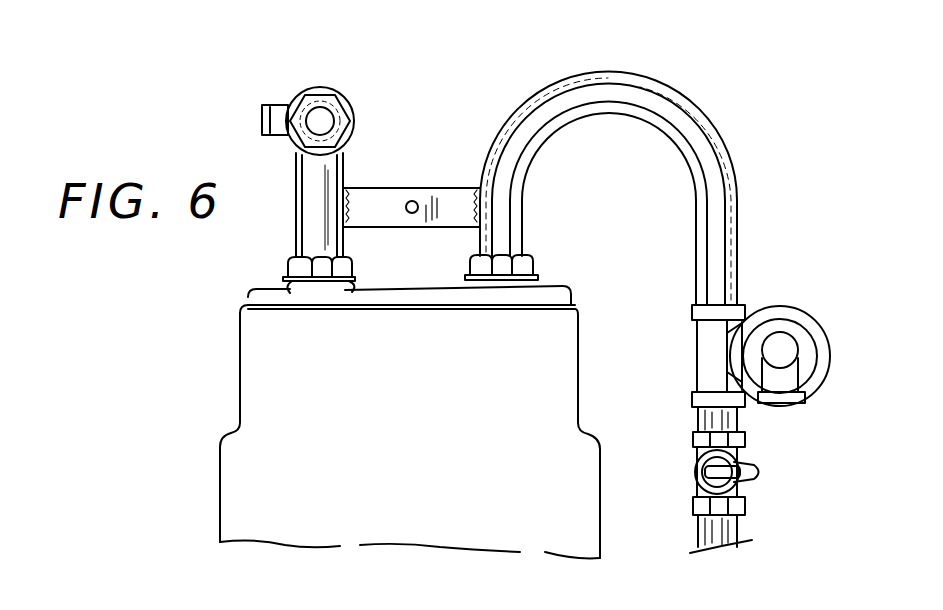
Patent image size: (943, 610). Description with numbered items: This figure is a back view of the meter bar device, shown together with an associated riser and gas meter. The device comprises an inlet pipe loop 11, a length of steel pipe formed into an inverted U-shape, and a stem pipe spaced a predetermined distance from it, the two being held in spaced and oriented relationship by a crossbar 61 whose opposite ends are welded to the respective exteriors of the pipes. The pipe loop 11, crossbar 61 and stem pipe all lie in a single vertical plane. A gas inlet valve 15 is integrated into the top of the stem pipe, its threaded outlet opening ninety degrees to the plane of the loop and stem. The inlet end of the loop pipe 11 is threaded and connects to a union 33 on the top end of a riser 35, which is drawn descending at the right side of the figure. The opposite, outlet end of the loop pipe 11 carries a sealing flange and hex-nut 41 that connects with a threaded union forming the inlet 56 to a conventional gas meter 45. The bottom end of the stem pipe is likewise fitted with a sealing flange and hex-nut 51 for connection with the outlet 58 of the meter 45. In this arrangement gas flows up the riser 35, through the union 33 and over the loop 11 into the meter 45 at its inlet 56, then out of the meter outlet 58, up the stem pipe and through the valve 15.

The inlet pipe loop 11 is at (648, 80).
The gas inlet valve 15 is at (352, 106).
The crossbar 61 is at (374, 197).
The hex-nut 51 is at (290, 263).
The outlet 58 is at (357, 290).
The hex-nut 41 is at (536, 265).
The inlet 56 is at (545, 288).
The gas meter 45 is at (579, 342).
The union 33 is at (707, 357).
The riser 35 is at (738, 428).